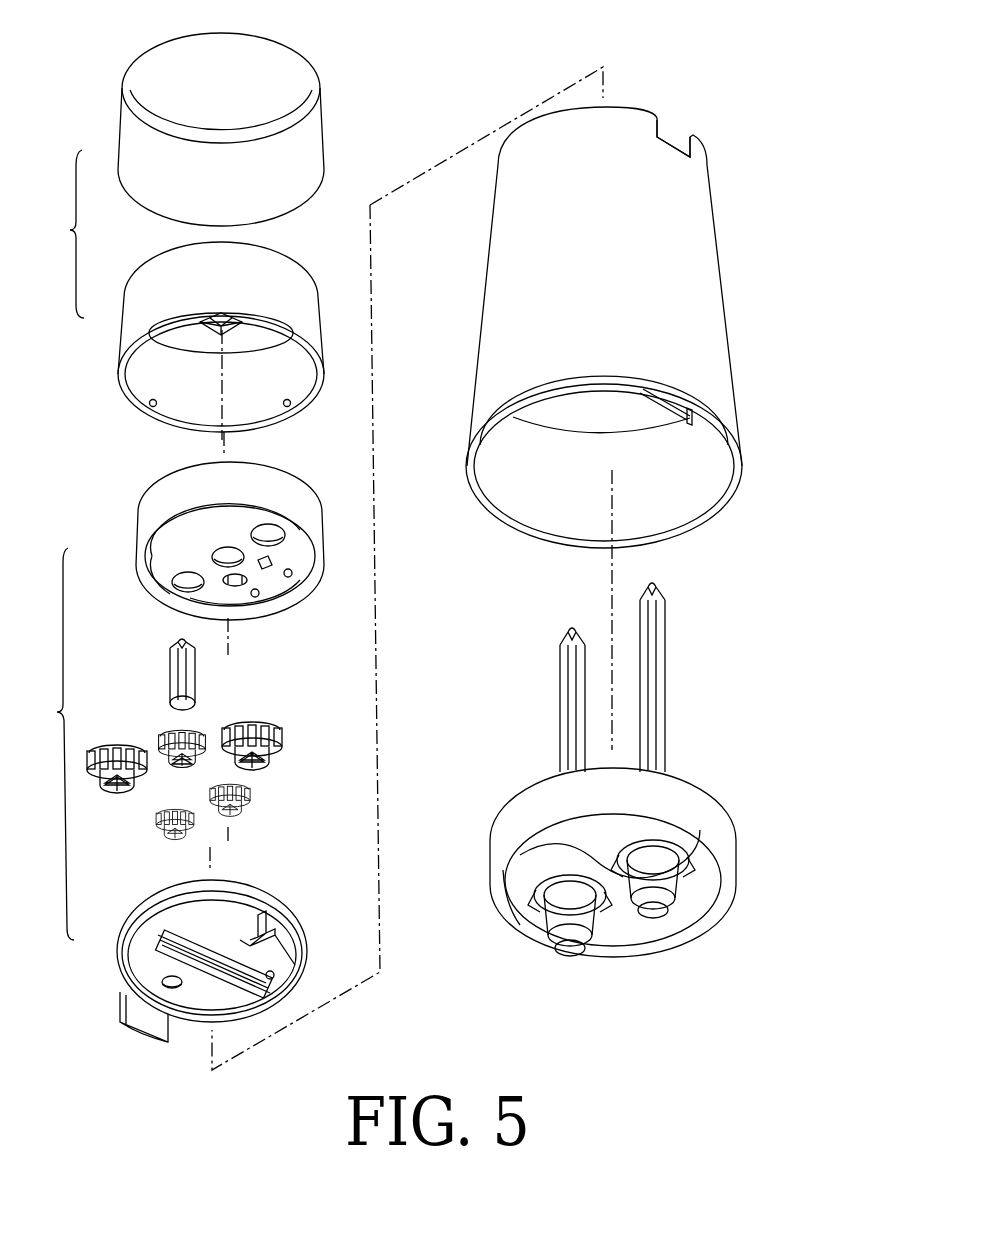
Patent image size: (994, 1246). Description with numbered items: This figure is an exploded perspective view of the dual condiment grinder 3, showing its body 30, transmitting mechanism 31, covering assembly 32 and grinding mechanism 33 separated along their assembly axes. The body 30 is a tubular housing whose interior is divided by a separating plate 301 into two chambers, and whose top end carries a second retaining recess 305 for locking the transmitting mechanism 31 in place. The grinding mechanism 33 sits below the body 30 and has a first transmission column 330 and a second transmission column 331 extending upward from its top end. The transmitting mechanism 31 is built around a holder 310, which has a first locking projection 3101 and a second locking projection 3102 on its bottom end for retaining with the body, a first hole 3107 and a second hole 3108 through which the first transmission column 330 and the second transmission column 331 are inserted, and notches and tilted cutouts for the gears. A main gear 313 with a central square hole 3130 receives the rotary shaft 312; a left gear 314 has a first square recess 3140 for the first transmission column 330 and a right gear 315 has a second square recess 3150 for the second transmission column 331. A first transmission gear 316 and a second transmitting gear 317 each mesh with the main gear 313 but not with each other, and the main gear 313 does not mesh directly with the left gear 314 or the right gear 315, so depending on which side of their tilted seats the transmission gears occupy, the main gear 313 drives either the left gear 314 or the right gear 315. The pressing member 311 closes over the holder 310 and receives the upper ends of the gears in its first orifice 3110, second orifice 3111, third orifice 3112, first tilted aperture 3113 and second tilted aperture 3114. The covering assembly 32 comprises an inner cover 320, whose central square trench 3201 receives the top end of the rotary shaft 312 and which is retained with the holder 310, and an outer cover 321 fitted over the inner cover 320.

The dual condiment grinder 3 is at (486, 69).
The body 30 is at (703, 228).
The separating plate 301 is at (697, 410).
The second retaining recess 305 is at (673, 133).
The transmitting mechanism 31 is at (51, 744).
The holder 310 is at (277, 900).
The first locking projection 3101 is at (152, 1023).
The second locking projection 3102 is at (295, 938).
The first hole 3107 is at (160, 982).
The second hole 3108 is at (295, 966).
The pressing member 311 is at (190, 473).
The first orifice 3110 is at (213, 557).
The second orifice 3111 is at (183, 585).
The third orifice 3112 is at (272, 530).
The first tilted aperture 3113 is at (238, 587).
The second tilted aperture 3114 is at (268, 572).
The rotary shaft 312 is at (177, 672).
The main gear 313 is at (203, 740).
The square hole 3130 is at (205, 768).
The left gear 314 is at (115, 750).
The first square recess 3140 is at (112, 793).
The right gear 315 is at (275, 757).
The second square recess 3150 is at (260, 768).
The first transmission gear 316 is at (163, 840).
The second transmitting gear 317 is at (238, 820).
The covering assembly 32 is at (61, 234).
The inner cover 320 is at (270, 255).
The square trench 3201 is at (200, 330).
The outer cover 321 is at (285, 53).
The grinding mechanism 33 is at (692, 768).
The first transmission column 330 is at (565, 687).
The second transmission column 331 is at (658, 660).